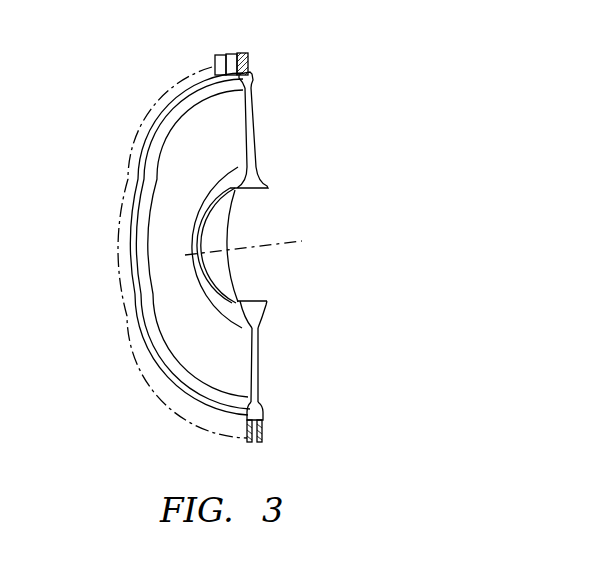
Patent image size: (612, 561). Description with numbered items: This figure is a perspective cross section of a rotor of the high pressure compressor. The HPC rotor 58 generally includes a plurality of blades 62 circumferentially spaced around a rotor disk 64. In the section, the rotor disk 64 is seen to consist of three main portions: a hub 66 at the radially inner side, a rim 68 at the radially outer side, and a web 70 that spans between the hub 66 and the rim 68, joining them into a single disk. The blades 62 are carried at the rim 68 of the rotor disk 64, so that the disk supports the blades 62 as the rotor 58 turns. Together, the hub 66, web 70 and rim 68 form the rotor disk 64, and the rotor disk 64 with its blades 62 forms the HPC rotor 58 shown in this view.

The HPC rotor 58 is at (340, 112).
The blade 62 is at (254, 66).
The rotor disk 64 is at (229, 349).
The hub 66 is at (224, 270).
The rim 68 is at (219, 402).
The web 70 is at (190, 352).